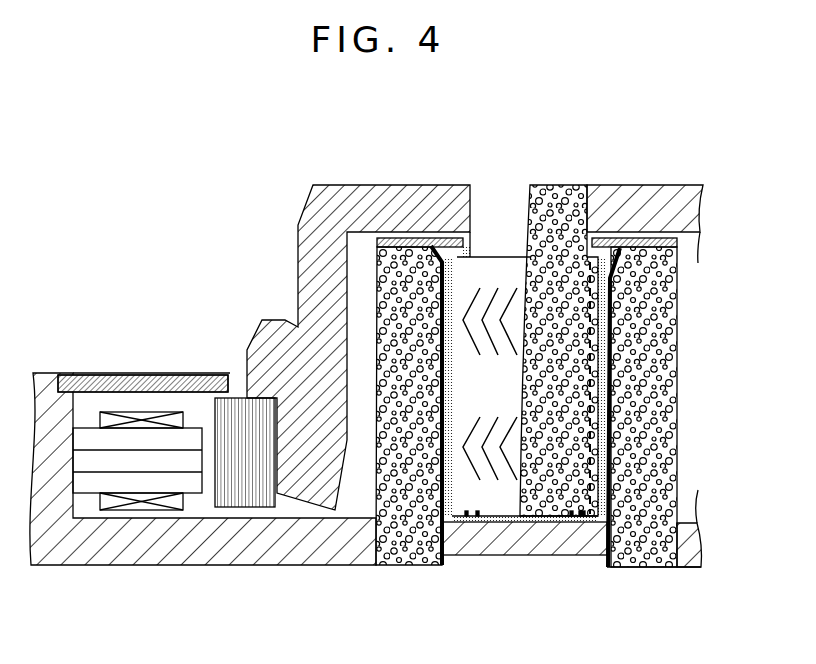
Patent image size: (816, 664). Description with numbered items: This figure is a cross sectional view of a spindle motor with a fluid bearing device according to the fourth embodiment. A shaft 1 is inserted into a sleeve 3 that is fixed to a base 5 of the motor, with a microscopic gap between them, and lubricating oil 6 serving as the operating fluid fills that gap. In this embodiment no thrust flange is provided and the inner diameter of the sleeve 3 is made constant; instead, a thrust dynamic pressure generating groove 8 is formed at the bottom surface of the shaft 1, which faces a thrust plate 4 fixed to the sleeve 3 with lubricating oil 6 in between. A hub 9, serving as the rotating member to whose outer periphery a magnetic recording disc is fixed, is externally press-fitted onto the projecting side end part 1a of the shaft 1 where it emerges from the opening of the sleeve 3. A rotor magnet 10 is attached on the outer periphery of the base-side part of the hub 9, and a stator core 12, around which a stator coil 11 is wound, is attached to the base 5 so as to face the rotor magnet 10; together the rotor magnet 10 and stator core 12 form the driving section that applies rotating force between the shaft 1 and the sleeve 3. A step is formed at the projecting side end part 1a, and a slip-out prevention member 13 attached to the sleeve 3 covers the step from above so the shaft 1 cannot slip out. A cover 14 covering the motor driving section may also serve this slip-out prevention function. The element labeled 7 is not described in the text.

The shaft 1 is at (507, 493).
The projecting side end part 1a is at (488, 198).
The sleeve 3 is at (648, 378).
The thrust plate 4 is at (563, 537).
The base 5 is at (200, 533).
The lubricating oil 6 is at (446, 238).
The flow passage 7 is at (460, 427).
The thrust dynamic pressure generating groove 8 is at (478, 527).
The hub 9 is at (353, 192).
The rotor magnet 10 is at (248, 420).
The stator coil 11 is at (110, 500).
The stator core 12 is at (113, 415).
The slip-out prevention member 13 is at (603, 237).
The cover 14 is at (177, 375).